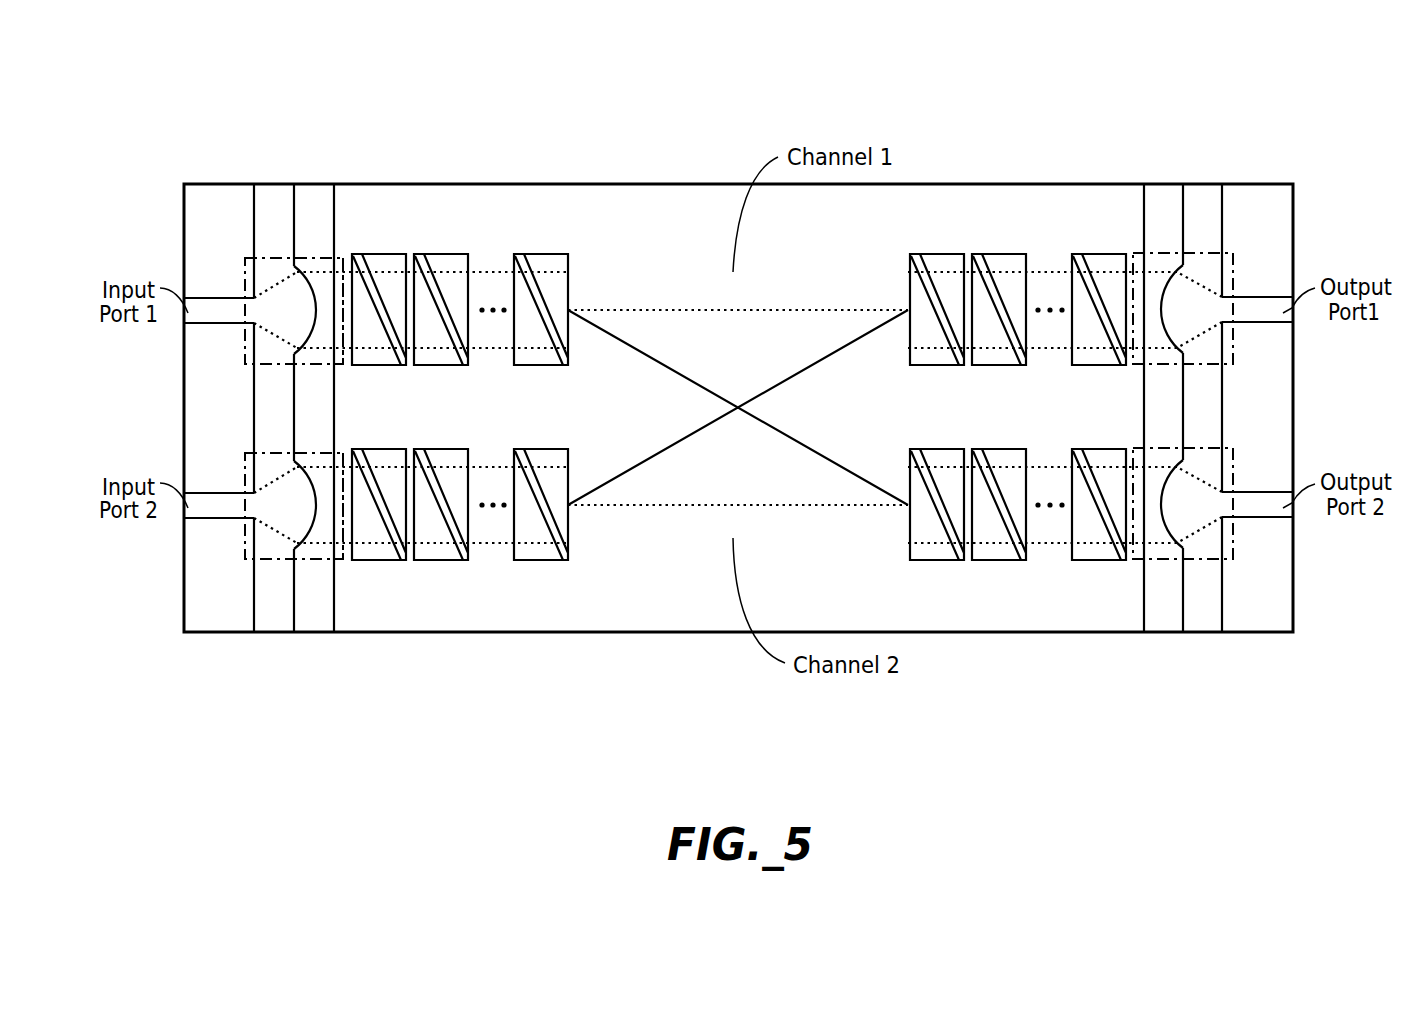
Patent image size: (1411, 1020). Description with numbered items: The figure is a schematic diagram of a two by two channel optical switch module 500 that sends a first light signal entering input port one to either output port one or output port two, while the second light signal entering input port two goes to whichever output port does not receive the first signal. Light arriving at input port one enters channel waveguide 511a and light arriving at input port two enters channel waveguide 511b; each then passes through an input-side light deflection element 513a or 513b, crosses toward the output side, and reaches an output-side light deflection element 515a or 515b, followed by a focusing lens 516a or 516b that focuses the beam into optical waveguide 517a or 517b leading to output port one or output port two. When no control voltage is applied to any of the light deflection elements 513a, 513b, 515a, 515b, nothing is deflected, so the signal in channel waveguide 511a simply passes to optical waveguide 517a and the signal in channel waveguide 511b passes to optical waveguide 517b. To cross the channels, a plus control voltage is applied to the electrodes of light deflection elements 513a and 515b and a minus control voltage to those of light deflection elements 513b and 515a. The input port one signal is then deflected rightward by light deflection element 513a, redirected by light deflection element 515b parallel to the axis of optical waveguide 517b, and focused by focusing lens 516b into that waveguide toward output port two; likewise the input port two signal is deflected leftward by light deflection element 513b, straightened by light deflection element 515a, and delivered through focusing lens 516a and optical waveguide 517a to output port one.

The optical switch module 500 is at (1155, 93).
The channel waveguide 511a is at (202, 325).
The channel waveguide 511b is at (202, 520).
The light deflection element 513a is at (571, 377).
The light deflection element 513b is at (457, 530).
The light deflection element 515a is at (1127, 377).
The light deflection element 515b is at (1016, 530).
The focusing lens 516a is at (1207, 297).
The focusing lens 516b is at (1207, 517).
The optical waveguide 517a is at (1275, 323).
The optical waveguide 517b is at (1277, 518).